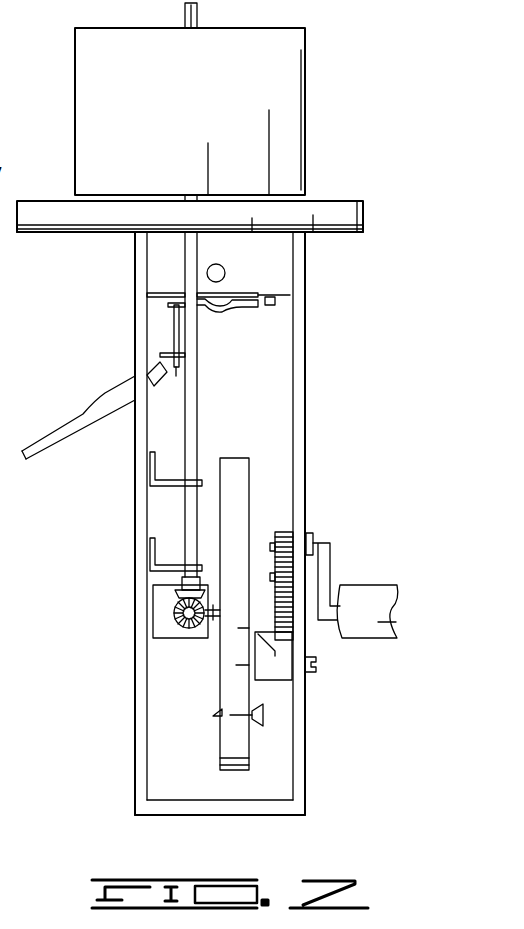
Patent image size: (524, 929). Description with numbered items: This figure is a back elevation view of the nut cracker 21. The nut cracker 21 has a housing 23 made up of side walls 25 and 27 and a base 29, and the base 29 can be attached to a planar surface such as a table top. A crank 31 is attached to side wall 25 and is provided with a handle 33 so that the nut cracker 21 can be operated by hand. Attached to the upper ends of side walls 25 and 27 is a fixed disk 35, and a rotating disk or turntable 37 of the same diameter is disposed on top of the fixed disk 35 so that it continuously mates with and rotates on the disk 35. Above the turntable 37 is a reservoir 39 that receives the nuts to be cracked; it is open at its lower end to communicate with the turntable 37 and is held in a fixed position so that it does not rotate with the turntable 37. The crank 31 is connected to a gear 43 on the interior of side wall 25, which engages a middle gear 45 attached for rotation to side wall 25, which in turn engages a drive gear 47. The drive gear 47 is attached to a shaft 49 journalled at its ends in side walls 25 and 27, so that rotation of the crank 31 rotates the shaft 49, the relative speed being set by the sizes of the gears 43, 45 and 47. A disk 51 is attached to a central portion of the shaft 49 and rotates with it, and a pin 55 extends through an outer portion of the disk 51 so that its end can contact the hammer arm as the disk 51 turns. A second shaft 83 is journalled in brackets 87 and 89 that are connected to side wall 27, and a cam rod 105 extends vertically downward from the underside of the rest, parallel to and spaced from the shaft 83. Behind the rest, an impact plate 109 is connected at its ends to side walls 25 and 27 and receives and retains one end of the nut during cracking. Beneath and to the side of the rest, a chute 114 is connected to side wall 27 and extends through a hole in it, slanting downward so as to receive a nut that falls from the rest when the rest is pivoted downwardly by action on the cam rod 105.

The nut cracker 21 is at (72, 23).
The housing 23 is at (95, 595).
The side wall 25 is at (300, 368).
The side wall 27 is at (143, 665).
The base 29 is at (232, 805).
The crank 31 is at (326, 560).
The handle 33 is at (355, 598).
The fixed disk 35 is at (330, 232).
The turntable 37 is at (326, 208).
The reservoir 39 is at (270, 40).
The gear 43 is at (288, 530).
The middle gear 45 is at (276, 556).
The drive gear 47 is at (293, 634).
The shaft 49 is at (215, 620).
The disk 51 is at (232, 750).
The pin 55 is at (263, 715).
The shaft 83 is at (190, 382).
The bracket 87 is at (150, 558).
The bracket 89 is at (150, 470).
The cam rod 105 is at (175, 325).
The impact plate 109 is at (160, 268).
The chute 114 is at (100, 403).